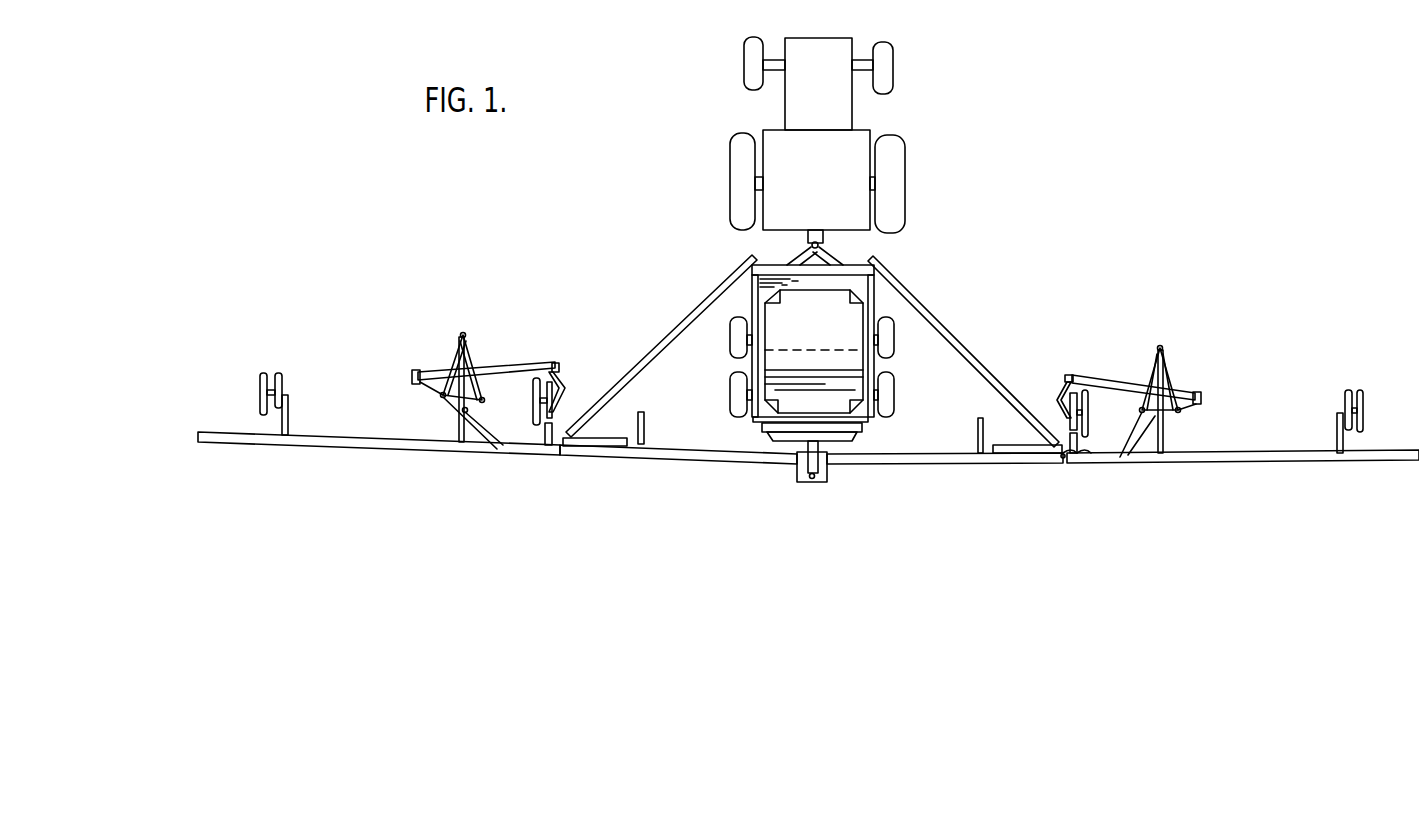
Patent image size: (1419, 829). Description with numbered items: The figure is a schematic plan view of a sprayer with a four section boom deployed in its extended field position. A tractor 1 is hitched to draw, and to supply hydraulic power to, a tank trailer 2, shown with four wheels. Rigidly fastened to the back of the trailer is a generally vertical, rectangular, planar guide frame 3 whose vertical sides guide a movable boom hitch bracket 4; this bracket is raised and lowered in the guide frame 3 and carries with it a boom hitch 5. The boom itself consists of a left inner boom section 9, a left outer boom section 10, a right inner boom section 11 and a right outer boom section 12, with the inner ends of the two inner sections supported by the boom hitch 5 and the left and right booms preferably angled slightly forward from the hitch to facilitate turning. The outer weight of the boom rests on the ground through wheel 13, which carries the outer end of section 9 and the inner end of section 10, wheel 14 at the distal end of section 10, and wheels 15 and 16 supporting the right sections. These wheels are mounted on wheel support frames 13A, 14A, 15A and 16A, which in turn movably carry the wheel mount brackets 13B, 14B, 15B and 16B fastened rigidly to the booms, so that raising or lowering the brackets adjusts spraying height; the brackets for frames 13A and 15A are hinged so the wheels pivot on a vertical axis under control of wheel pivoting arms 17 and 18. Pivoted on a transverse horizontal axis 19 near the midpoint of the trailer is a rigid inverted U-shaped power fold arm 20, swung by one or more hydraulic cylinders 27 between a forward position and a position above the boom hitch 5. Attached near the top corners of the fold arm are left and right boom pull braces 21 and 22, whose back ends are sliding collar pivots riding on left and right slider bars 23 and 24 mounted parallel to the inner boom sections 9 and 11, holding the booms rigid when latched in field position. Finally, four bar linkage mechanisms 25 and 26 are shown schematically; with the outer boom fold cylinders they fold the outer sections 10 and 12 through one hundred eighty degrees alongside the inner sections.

The tractor 1 is at (830, 40).
The tank trailer 2 is at (860, 318).
The guide frame 3 is at (864, 430).
The boom hitch bracket 4 is at (858, 438).
The boom hitch 5 is at (828, 480).
The left inner boom section 9 is at (658, 462).
The left outer boom section 10 is at (366, 450).
The right inner boom section 11 is at (975, 468).
The right outer boom section 12 is at (1232, 466).
The wheel 13 is at (532, 393).
The wheel support frame 13A is at (546, 378).
The wheel mount bracket 13B is at (536, 450).
The wheel 14 is at (258, 388).
The wheel support frame 14A is at (292, 370).
The wheel mount bracket 14B is at (292, 412).
The wheel 15 is at (1088, 410).
The wheel support frame 15A is at (1070, 374).
The wheel mount bracket 15B is at (1078, 464).
The wheel 16 is at (1364, 422).
The wheel support frame 16A is at (1348, 392).
The wheel mount bracket 16B is at (1337, 438).
The wheel pivoting arm 17 is at (562, 374).
The wheel pivoting arm 18 is at (1060, 384).
The transverse horizontal axis 19 is at (818, 350).
The power fold arm 20 is at (866, 250).
The left boom pull brace 21 is at (684, 315).
The right boom pull brace 22 is at (950, 326).
The left slider bar 23 is at (608, 452).
The right slider bar 24 is at (1010, 465).
The four bar linkage mechanism 25 is at (455, 352).
The four bar linkage mechanism 26 is at (1180, 372).
The hydraulic cylinder 27 is at (748, 364).